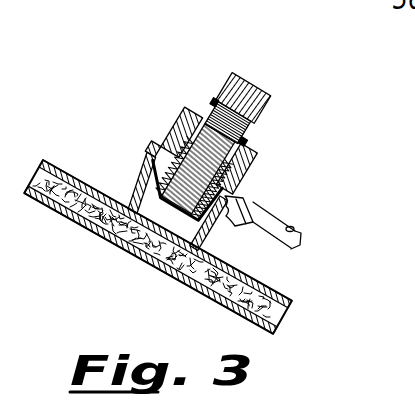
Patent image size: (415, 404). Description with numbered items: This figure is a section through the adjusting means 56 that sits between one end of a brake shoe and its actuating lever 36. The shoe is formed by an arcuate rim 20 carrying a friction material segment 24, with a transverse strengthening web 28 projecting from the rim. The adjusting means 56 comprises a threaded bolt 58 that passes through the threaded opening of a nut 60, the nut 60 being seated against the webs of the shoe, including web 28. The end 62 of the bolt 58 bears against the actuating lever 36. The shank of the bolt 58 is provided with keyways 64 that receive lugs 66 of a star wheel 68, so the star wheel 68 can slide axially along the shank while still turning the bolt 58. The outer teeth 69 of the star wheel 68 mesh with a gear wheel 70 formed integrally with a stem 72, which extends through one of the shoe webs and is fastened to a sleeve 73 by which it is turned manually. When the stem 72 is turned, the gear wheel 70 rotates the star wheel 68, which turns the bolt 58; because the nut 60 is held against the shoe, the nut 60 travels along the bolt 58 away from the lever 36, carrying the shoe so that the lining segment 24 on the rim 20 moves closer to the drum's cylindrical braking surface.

The arcuate rim 20 is at (58, 170).
The friction material segment 24 is at (93, 220).
The transverse strengthening web 28 is at (218, 240).
The actuating lever 36 is at (250, 83).
The adjusting means 56 is at (270, 102).
The threaded bolt 58 is at (198, 103).
The nut 60 is at (260, 142).
The end of bolt 62 is at (215, 103).
The keyway 64 is at (160, 192).
The lug 66 is at (187, 162).
The star wheel 68 is at (245, 164).
The outer teeth 69 is at (183, 125).
The gear wheel 70 is at (253, 201).
The stem 72 is at (289, 250).
The sleeve 73 is at (296, 232).